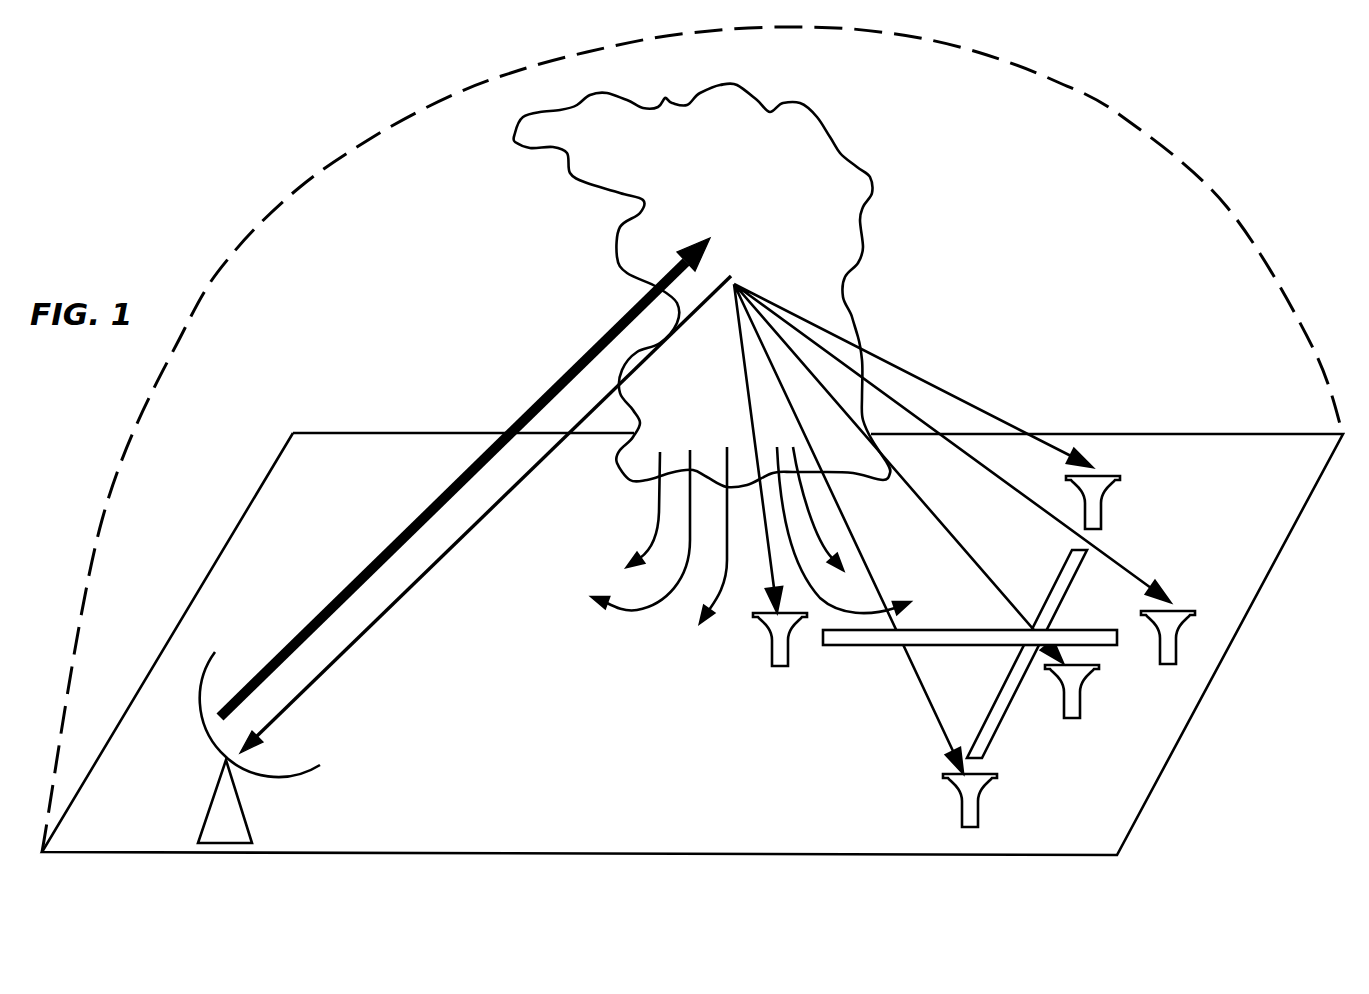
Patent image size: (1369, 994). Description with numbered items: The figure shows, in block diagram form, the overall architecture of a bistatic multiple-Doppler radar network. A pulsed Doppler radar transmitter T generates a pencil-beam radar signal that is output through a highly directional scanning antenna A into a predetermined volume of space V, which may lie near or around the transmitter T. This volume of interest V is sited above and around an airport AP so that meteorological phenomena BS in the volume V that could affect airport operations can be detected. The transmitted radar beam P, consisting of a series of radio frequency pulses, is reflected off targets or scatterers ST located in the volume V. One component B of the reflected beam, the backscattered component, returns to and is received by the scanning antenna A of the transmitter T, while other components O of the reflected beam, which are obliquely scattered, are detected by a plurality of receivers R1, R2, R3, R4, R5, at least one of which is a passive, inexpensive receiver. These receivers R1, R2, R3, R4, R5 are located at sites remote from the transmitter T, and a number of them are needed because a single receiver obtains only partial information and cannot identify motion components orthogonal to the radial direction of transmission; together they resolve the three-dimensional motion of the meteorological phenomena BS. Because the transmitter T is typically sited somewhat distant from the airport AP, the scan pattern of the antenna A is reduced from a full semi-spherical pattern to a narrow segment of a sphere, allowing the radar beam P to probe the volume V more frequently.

The volume of space V is at (986, 105).
The targets ST is at (755, 247).
The meteorological phenomena BS is at (863, 207).
The backscattered component of the reflected radar beam B is at (333, 600).
The transmitted radar beam P is at (416, 584).
The obliquely scattered components of the reflected radar beam O is at (993, 412).
The airport AP is at (1010, 672).
The receiver R1 is at (789, 655).
The receiver R2 is at (1101, 502).
The receiver R3 is at (1160, 654).
The receiver R4 is at (1077, 719).
The receiver R5 is at (980, 808).
The scanning antenna A is at (202, 712).
The pulsed Doppler radar transmitter T is at (243, 815).